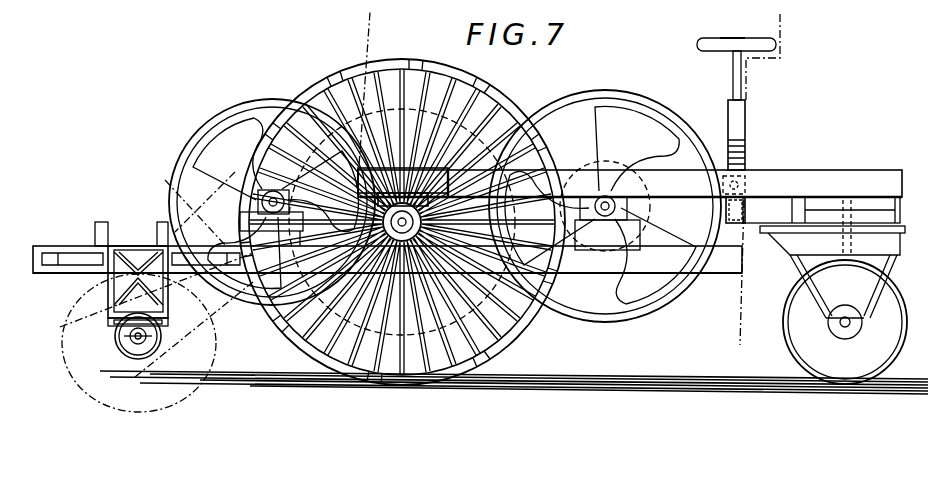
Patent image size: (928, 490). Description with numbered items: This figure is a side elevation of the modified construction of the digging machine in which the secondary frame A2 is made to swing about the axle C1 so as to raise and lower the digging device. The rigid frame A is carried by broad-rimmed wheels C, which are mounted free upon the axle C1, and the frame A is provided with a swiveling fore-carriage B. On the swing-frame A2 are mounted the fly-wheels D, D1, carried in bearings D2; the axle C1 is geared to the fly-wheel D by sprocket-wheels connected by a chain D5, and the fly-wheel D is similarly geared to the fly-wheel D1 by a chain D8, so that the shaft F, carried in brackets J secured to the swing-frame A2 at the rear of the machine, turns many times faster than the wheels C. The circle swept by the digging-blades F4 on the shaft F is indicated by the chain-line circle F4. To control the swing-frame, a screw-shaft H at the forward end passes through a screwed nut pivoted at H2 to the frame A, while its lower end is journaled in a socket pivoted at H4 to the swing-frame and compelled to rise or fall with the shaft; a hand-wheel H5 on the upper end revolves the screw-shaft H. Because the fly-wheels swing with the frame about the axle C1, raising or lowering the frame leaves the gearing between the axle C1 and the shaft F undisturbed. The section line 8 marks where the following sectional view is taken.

The broad-rimmed wheels C is at (322, 80).
The axle or shaft C1 is at (585, 338).
The fly-wheel D is at (673, 122).
The fly-wheel D1 is at (206, 128).
The bearings D2 is at (180, 193).
The chain D5 is at (520, 110).
The chain D8 is at (401, 178).
The rigid frame A is at (800, 186).
The secondary frame A2 is at (522, 268).
The screw-shaft H is at (745, 150).
The pivot of the nut H2 is at (746, 172).
The pivot of the socket H4 is at (744, 236).
The hand-wheel H5 is at (777, 45).
The swiveling fore-carriage B is at (833, 292).
The brackets J is at (107, 302).
The shaft F is at (133, 338).
The digging-blade F4 is at (212, 352).
The section line 8 8 is at (759, 183).